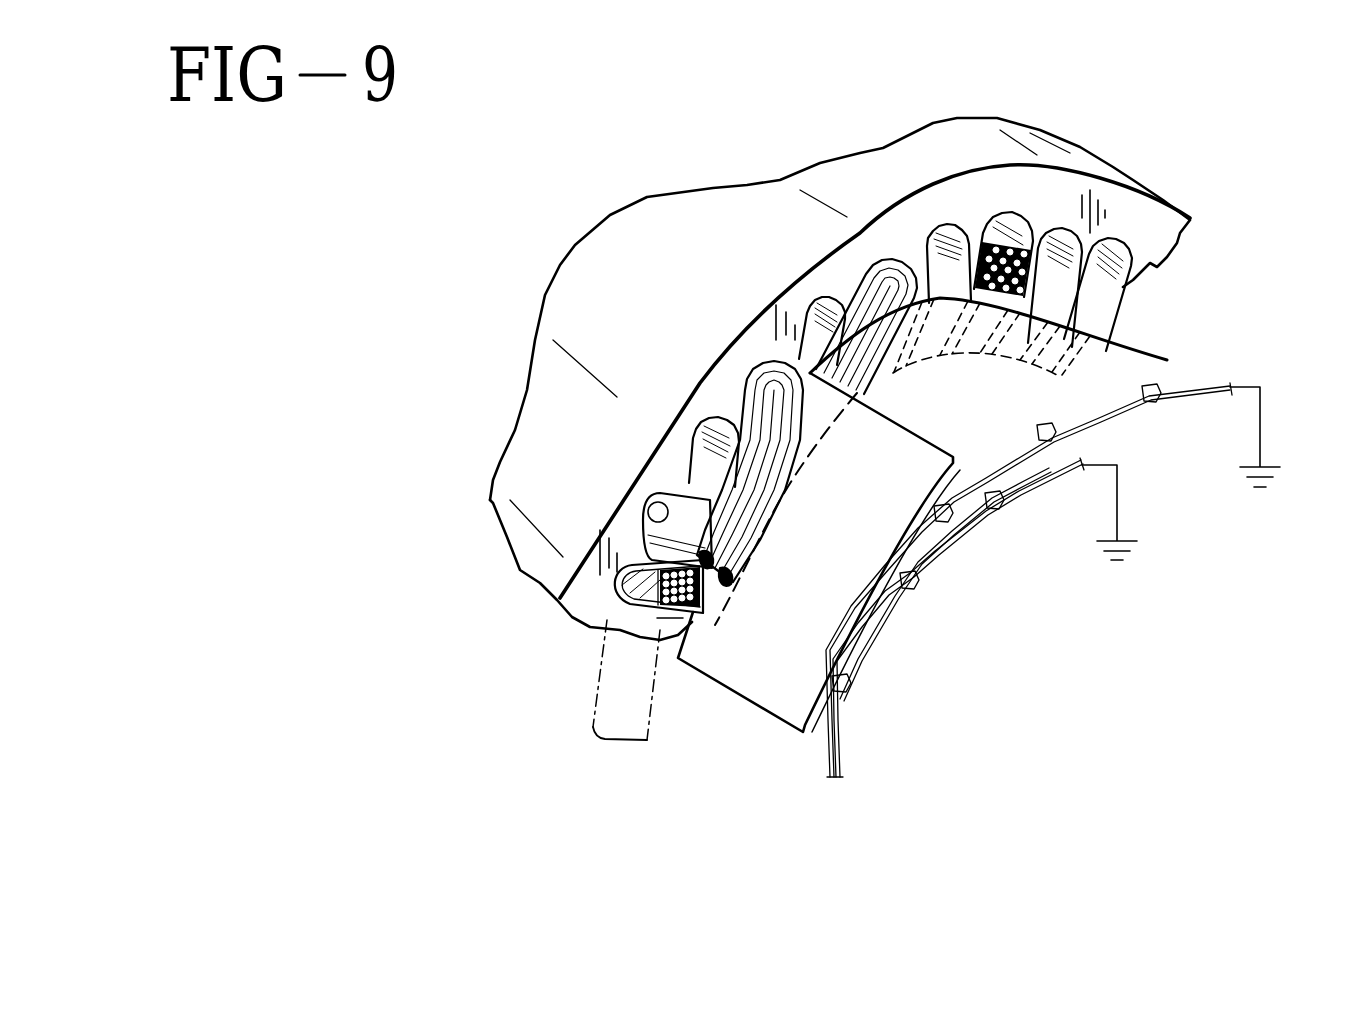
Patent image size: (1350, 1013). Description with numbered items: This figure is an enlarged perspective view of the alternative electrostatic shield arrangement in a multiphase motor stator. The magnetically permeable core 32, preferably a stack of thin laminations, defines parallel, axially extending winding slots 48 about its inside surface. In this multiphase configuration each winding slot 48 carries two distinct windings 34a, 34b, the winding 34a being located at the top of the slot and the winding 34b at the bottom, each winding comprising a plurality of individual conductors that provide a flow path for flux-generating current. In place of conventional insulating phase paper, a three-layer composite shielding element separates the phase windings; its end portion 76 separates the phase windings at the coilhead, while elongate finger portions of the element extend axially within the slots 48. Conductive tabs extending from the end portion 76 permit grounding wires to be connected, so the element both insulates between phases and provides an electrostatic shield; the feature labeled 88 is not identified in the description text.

The housing 32 is at (652, 228).
The first coil section in slot 34a is at (705, 618).
The second coil section (end turn) 34b is at (760, 368).
The coil end turn 48 is at (672, 425).
The stator core 76 is at (1127, 357).
The lead wire clip 88 is at (1160, 386).